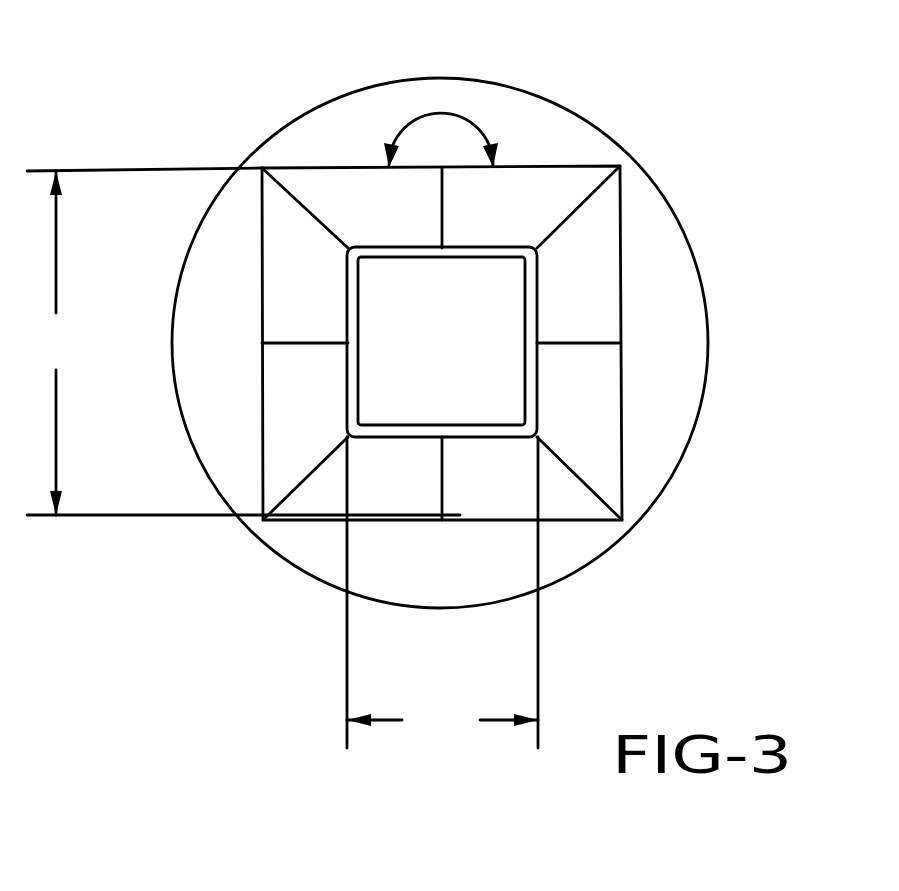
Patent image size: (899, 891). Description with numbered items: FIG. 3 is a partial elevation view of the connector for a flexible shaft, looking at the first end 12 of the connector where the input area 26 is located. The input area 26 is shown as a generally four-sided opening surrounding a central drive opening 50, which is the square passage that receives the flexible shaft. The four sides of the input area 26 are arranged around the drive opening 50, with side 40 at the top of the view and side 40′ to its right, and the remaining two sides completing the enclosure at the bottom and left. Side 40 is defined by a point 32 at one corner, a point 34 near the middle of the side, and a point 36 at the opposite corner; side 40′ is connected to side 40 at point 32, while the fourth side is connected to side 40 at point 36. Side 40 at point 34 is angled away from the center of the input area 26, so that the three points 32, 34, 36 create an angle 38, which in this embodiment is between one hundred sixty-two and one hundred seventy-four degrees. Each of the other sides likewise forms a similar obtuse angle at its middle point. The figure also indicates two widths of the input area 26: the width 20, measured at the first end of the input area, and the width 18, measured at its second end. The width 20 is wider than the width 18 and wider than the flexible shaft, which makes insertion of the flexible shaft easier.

The first end 12 is at (668, 485).
The width 18 is at (442, 592).
The width 20 is at (243, 341).
The input area 26 is at (623, 452).
The point 32 is at (620, 166).
The point 34 is at (443, 170).
The point 36 is at (262, 168).
The angle 38 is at (443, 113).
The side 40 is at (513, 217).
The side 40′ is at (585, 300).
The drive opening 50 is at (480, 370).